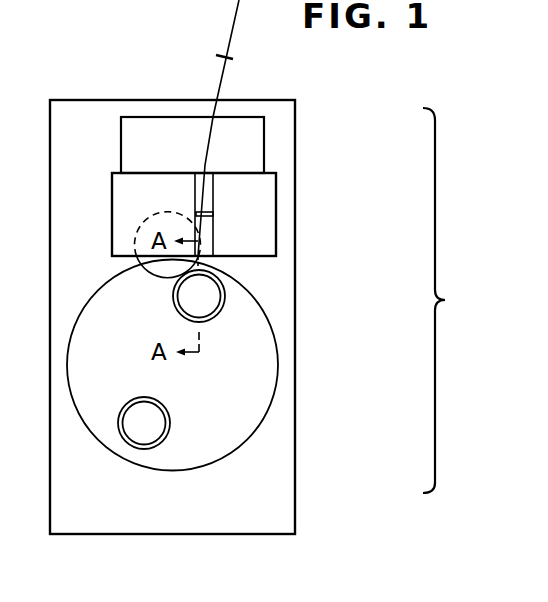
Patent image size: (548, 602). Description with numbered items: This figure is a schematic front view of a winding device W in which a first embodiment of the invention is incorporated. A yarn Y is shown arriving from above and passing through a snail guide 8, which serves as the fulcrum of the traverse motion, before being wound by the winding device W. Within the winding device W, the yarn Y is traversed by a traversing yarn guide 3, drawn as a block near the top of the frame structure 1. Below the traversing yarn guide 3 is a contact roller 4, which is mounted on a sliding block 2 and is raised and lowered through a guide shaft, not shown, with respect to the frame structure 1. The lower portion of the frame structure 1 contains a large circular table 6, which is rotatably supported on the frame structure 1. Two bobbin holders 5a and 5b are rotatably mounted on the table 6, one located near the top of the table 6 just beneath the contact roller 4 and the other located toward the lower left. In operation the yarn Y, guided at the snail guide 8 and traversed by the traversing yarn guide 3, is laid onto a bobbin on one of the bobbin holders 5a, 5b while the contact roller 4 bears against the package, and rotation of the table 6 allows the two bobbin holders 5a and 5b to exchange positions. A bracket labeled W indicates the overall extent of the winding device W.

The frame structure 1 is at (280, 276).
The sliding block 2 is at (197, 181).
The traversing yarn guide 3 is at (265, 203).
The contact roller 4 is at (152, 269).
The bobbin holder 5a is at (230, 305).
The bobbin holder 5b is at (122, 453).
The table 6 is at (264, 375).
The snail guide 8 is at (231, 51).
The yarn Y is at (218, 78).
The winding device W is at (446, 300).